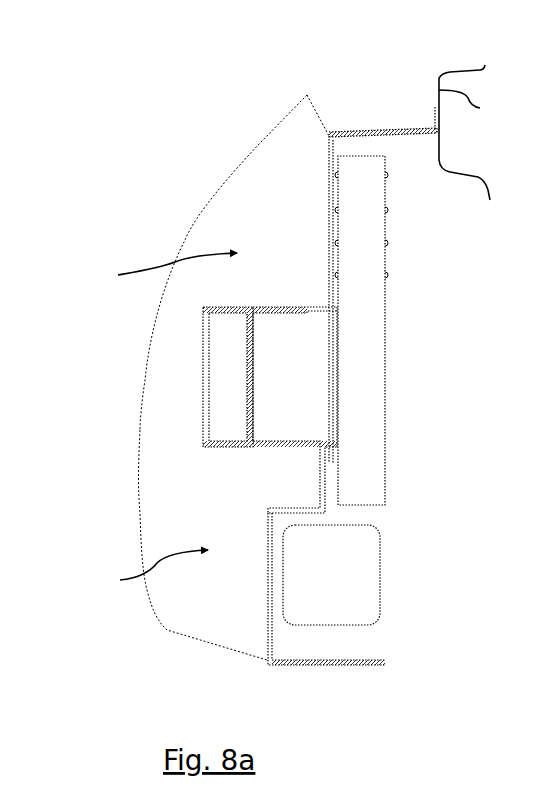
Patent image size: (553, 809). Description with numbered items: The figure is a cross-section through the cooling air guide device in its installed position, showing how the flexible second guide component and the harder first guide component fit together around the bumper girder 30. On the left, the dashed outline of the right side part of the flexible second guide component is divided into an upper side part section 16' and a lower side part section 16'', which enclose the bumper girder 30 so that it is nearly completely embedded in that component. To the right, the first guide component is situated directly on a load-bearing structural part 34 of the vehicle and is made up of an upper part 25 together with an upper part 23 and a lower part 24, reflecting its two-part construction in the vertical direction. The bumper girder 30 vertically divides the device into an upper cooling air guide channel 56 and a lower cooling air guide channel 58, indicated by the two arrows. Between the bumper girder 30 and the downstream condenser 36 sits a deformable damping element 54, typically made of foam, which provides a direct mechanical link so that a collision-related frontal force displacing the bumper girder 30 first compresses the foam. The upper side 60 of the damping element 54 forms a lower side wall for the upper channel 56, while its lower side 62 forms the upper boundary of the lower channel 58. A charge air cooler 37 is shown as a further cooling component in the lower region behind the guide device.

The first region 16' is at (221, 262).
The second region 16'' is at (166, 545).
The side wall 23 is at (328, 192).
The bottom wall 24 is at (268, 623).
The top wall 25 is at (362, 131).
The holder 30 is at (208, 375).
The bracket 34 is at (480, 108).
The panel 36 is at (385, 407).
The opening 37 is at (363, 572).
The housing 54 is at (312, 355).
The flow direction 56 is at (161, 270).
The flow direction 58 is at (139, 572).
The upper wall 60 is at (297, 306).
The lower wall 62 is at (266, 448).